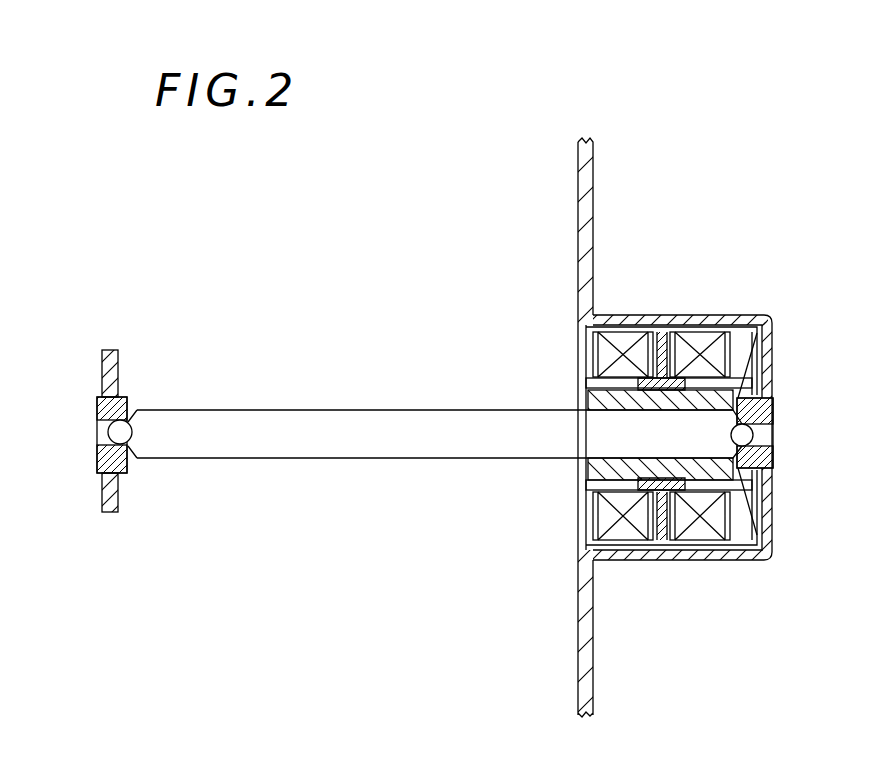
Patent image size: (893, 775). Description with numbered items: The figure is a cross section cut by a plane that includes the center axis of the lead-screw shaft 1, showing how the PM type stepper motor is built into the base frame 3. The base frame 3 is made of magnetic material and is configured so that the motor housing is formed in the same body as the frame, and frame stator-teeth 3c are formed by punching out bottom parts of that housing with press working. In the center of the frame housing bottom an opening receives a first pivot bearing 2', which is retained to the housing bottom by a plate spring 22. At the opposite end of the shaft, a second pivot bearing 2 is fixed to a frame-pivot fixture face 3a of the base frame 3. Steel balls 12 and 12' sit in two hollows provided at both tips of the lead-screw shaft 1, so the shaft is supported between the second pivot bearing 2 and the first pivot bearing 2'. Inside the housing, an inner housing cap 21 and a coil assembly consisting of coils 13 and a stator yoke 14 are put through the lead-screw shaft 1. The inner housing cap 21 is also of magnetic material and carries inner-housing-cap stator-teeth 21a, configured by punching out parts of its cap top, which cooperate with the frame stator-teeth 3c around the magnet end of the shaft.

The lead-screw shaft 1 is at (302, 445).
The second pivot bearing 2 is at (85, 431).
The first pivot bearing 2' is at (781, 425).
The base frame 3 is at (582, 218).
The frame-pivot fixture face 3a is at (113, 353).
The frame stator-teeth 3c is at (750, 500).
The steel ball 12 is at (88, 456).
The steel ball 12' is at (779, 451).
The coils 13 is at (705, 535).
The stator yoke 14 is at (645, 548).
The inner housing cap 21 is at (583, 370).
The inner-housing-cap stator-teeth 21a is at (605, 500).
The plate spring 22 is at (752, 367).